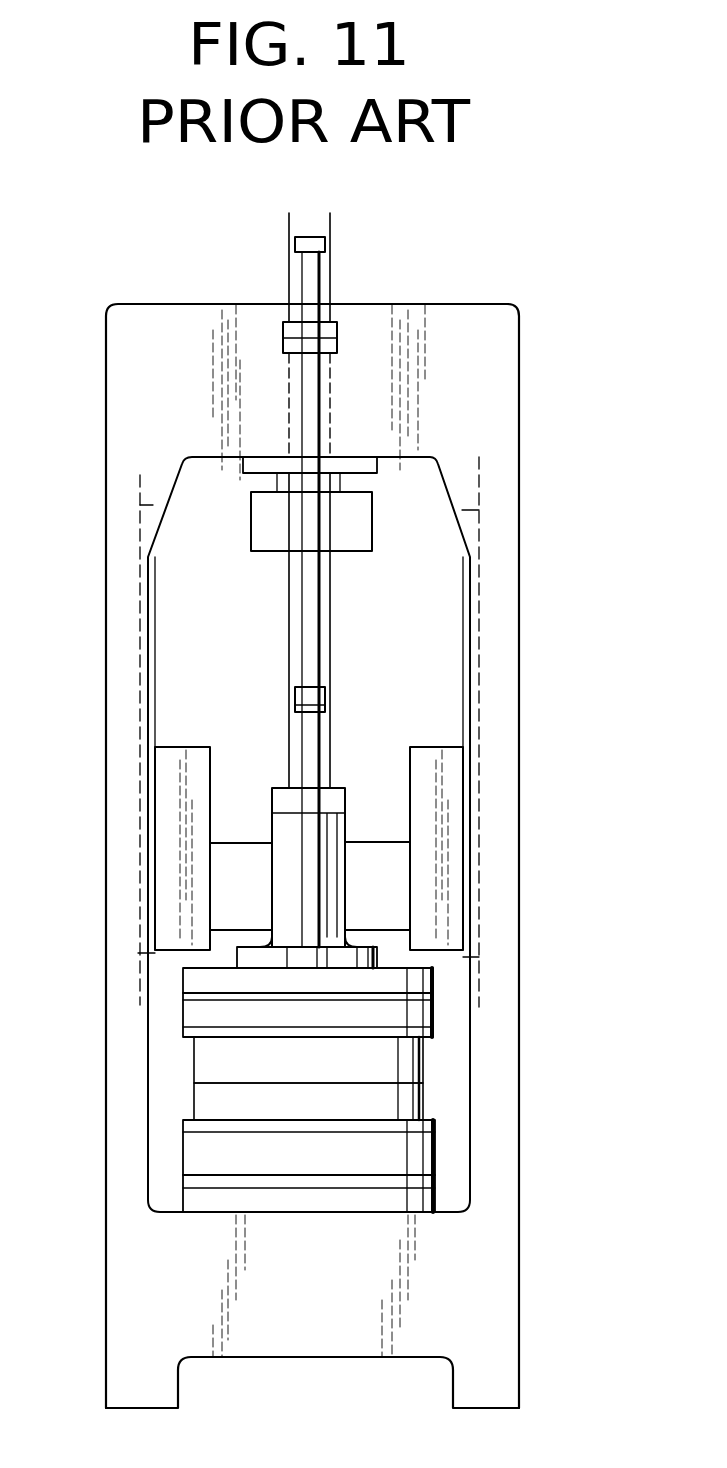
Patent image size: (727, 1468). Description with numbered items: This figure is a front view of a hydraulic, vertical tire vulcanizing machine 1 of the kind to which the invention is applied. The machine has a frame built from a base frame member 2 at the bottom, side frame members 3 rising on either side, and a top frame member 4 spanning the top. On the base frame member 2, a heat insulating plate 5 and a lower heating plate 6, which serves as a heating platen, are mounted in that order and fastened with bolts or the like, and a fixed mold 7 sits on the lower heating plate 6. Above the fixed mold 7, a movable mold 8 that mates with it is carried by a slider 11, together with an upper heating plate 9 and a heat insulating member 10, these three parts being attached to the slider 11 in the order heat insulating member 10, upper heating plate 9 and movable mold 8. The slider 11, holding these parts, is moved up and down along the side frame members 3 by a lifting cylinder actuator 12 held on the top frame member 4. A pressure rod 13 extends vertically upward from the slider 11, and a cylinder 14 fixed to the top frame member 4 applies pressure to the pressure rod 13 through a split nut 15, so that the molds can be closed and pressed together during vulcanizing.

The tire vulcanizing machine 1 is at (309, 821).
The base frame member 2 is at (302, 1337).
The side frame members 3 is at (108, 742).
The top frame member 4 is at (374, 320).
The heat insulating plate 5 is at (435, 1180).
The lower heating plate 6 is at (435, 1155).
The fixed mold 7 is at (423, 1102).
The movable mold 8 is at (423, 1058).
The upper heating plate 9 is at (433, 1012).
The heat insulating member 10 is at (433, 987).
The slider 11 is at (452, 922).
The lifting cylinder actuator 12 is at (312, 388).
The pressure rod 13 is at (330, 745).
The cylinder 14 is at (376, 461).
The split nut 15 is at (372, 527).